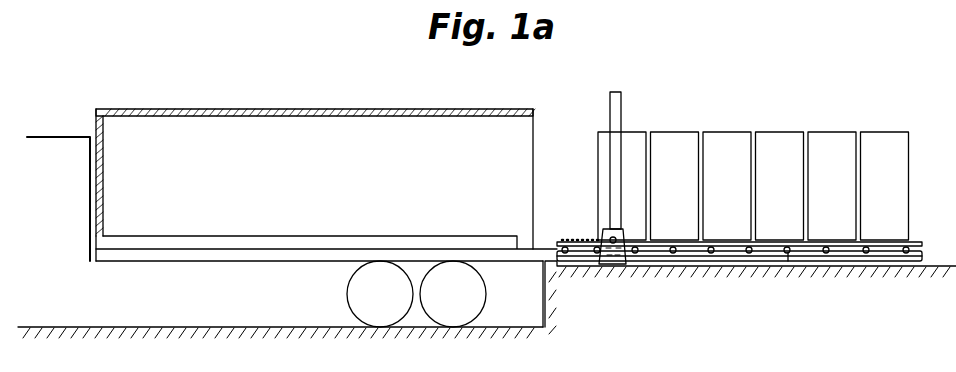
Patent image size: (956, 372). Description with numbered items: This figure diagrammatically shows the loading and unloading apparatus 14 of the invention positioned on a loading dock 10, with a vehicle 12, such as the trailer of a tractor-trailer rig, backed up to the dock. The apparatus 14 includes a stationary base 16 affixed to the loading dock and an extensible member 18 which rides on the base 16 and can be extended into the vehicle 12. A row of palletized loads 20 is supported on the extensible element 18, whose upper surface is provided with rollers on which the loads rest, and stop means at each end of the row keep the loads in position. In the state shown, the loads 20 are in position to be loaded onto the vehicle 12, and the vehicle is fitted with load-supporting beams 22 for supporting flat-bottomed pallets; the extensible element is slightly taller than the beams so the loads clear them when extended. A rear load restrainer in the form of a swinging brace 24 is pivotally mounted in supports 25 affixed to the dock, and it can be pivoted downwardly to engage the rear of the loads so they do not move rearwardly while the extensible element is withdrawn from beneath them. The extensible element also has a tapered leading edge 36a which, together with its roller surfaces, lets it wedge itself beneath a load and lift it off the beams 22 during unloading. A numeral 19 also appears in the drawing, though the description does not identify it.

The loading dock 10 is at (728, 312).
The vehicle 12 is at (305, 110).
The loading and unloading apparatus 14 is at (820, 267).
The stationary base 16 is at (870, 264).
The extensible member 18 is at (870, 247).
The conveyor beam 19 is at (665, 258).
The palletized loads 20 is at (817, 130).
The load-supporting beams 22 is at (249, 240).
The rear load restrainer 24 is at (621, 100).
The supports 25 is at (599, 255).
The tapered leading edge 36a is at (566, 240).